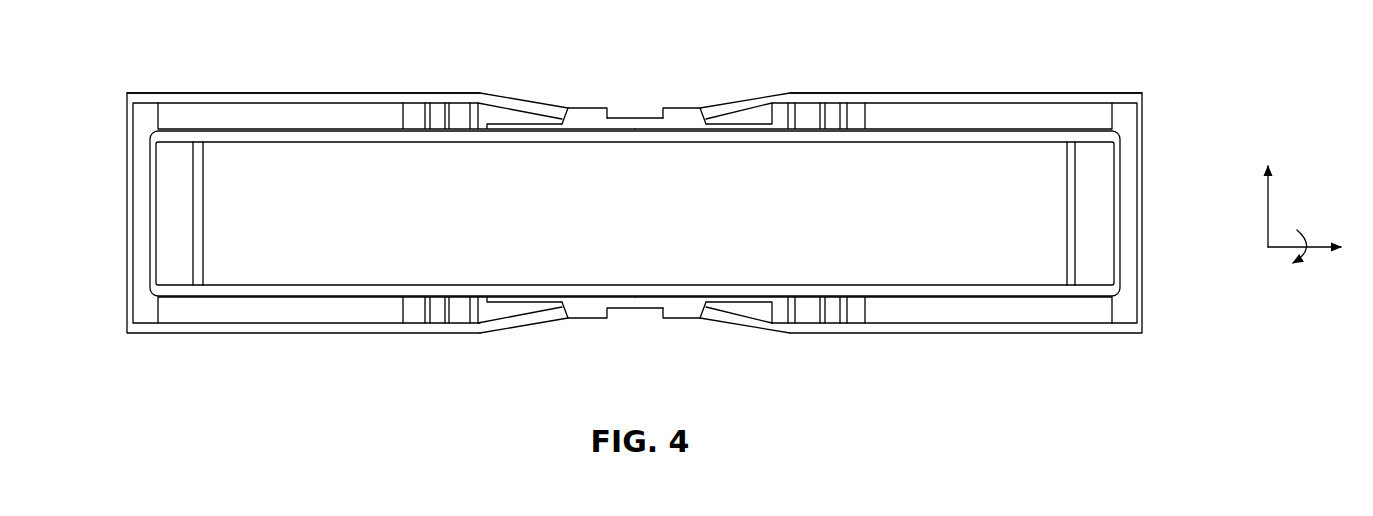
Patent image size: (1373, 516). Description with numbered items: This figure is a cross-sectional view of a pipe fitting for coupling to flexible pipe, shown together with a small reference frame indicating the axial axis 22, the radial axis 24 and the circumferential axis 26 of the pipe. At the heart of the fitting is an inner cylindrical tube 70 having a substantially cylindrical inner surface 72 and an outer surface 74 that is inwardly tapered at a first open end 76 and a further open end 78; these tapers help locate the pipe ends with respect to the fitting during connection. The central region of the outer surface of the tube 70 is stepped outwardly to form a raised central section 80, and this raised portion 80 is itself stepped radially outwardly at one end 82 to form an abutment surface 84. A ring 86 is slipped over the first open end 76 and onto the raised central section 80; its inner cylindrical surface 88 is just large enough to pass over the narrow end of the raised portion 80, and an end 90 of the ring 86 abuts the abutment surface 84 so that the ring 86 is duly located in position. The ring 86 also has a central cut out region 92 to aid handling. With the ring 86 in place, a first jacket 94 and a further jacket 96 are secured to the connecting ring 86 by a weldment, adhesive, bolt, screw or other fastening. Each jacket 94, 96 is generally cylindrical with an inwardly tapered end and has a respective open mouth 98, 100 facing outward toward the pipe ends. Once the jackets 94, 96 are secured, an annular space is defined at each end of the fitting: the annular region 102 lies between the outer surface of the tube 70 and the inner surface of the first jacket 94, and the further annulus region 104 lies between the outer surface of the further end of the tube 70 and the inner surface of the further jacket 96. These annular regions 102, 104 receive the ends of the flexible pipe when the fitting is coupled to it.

The axial axis 22 is at (1315, 253).
The radial axis 24 is at (1265, 212).
The circumferential axis 26 is at (1297, 230).
The inner cylindrical tube 70 is at (237, 302).
The inner surface 72 is at (329, 277).
The outer surface 74 is at (1013, 304).
The first open end 76 is at (165, 232).
The further open end 78 is at (1105, 238).
The raised central section 80 is at (502, 309).
The end of raised portion 82 is at (762, 316).
The abutment surface 84 is at (704, 318).
The ring 86 is at (590, 106).
The inner cylindrical surface 88 is at (639, 297).
The end of ring 90 is at (704, 110).
The central cut out region 92 is at (640, 113).
The first jacket 94 is at (235, 93).
The further jacket 96 is at (1052, 93).
The open mouth 98 is at (113, 112).
The open mouth 100 is at (1170, 106).
The annular region 102 is at (343, 115).
The further annulus region 104 is at (942, 117).